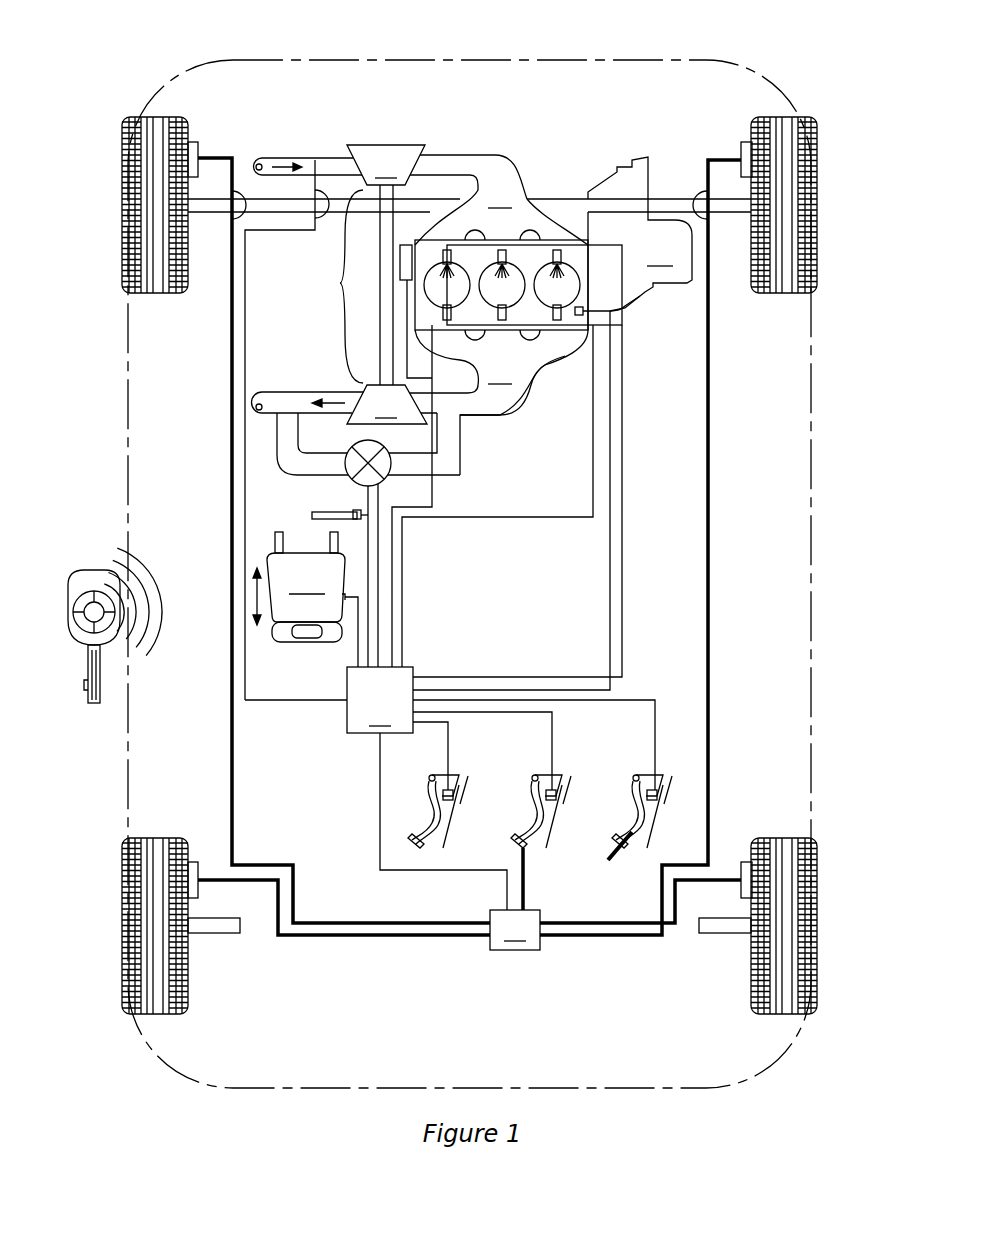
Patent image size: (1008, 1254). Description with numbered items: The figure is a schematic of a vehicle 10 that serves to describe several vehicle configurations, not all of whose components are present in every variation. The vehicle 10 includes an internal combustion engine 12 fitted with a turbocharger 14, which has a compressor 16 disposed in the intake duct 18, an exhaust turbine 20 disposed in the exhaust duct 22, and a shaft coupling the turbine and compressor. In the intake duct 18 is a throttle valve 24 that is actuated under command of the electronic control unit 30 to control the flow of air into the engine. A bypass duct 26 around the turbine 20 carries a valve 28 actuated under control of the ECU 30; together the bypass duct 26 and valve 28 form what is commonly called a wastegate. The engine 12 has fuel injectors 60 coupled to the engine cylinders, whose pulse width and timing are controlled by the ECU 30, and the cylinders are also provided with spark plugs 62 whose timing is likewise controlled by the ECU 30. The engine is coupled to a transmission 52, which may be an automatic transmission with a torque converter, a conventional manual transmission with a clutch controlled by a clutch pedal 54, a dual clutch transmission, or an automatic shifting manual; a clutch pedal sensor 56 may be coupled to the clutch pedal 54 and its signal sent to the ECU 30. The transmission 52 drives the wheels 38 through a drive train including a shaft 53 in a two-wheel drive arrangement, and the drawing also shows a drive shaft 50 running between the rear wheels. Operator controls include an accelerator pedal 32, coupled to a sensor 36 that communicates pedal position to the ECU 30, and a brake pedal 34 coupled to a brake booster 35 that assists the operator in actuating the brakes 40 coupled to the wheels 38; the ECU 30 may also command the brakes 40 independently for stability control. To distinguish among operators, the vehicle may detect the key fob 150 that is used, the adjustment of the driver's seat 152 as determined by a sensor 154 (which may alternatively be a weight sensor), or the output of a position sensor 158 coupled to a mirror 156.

The vehicle 10 is at (138, 70).
The internal combustion engine 12 is at (491, 285).
The turbocharger 14 is at (338, 285).
The compressor 16 is at (386, 265).
The intake duct 18 is at (500, 196).
The exhaust turbine 20 is at (340, 404).
The exhaust duct 22 is at (500, 372).
The throttle valve 24 is at (318, 162).
The bypass duct 26 is at (452, 436).
The valve 28 is at (353, 481).
The electronic control unit 30 is at (450, 610).
The accelerator pedal 32 is at (629, 795).
The brake pedal 34 is at (528, 795).
The brake booster 35 is at (515, 899).
The sensor 36 is at (663, 790).
The wheels 38 is at (122, 205).
The brakes 40 is at (196, 150).
The drive shaft 50 is at (392, 936).
The transmission 52 is at (640, 243).
The shaft 53 is at (258, 198).
The clutch pedal 54 is at (425, 795).
The clutch pedal sensor 56 is at (458, 790).
The fuel injectors 60 is at (461, 284).
The spark plugs 62 is at (443, 320).
The key fob 150 is at (80, 573).
The driver's seat 152 is at (299, 587).
The sensor 154 is at (346, 580).
The mirror 156 is at (312, 516).
The position sensor 158 is at (358, 519).